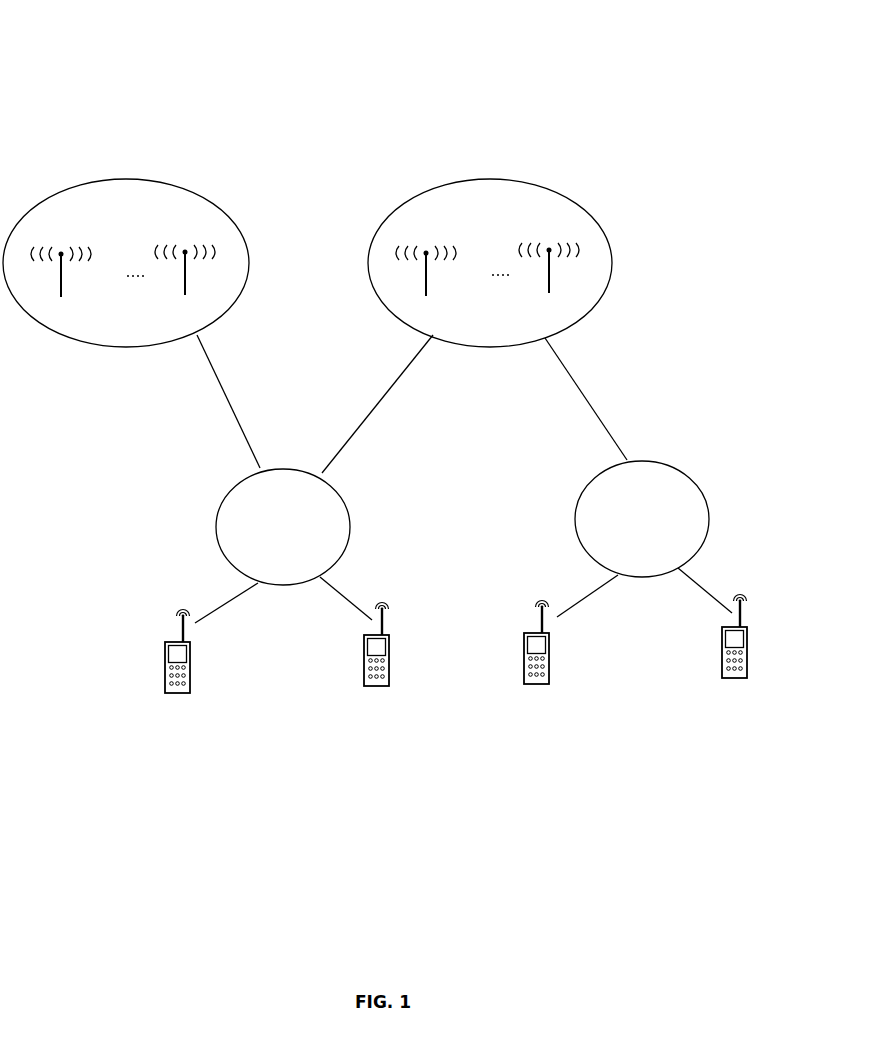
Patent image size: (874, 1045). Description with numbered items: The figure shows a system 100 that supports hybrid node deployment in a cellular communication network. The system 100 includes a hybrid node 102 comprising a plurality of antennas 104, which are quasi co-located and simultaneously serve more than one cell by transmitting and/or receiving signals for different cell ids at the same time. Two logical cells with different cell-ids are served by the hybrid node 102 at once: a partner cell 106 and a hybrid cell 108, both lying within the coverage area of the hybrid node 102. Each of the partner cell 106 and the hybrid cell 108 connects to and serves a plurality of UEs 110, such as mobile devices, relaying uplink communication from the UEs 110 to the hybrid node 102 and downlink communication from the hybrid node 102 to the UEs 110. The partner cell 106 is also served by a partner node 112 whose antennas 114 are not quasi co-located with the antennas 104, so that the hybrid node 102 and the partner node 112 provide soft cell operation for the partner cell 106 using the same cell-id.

The system 100 is at (120, 63).
The hybrid node 102 is at (516, 336).
The antennas 104 is at (477, 290).
The partner cell 106 is at (297, 558).
The hybrid cell 108 is at (657, 550).
The UEs 110 is at (238, 696).
The partner node 112 is at (152, 340).
The antennas of partner node 114 is at (112, 295).